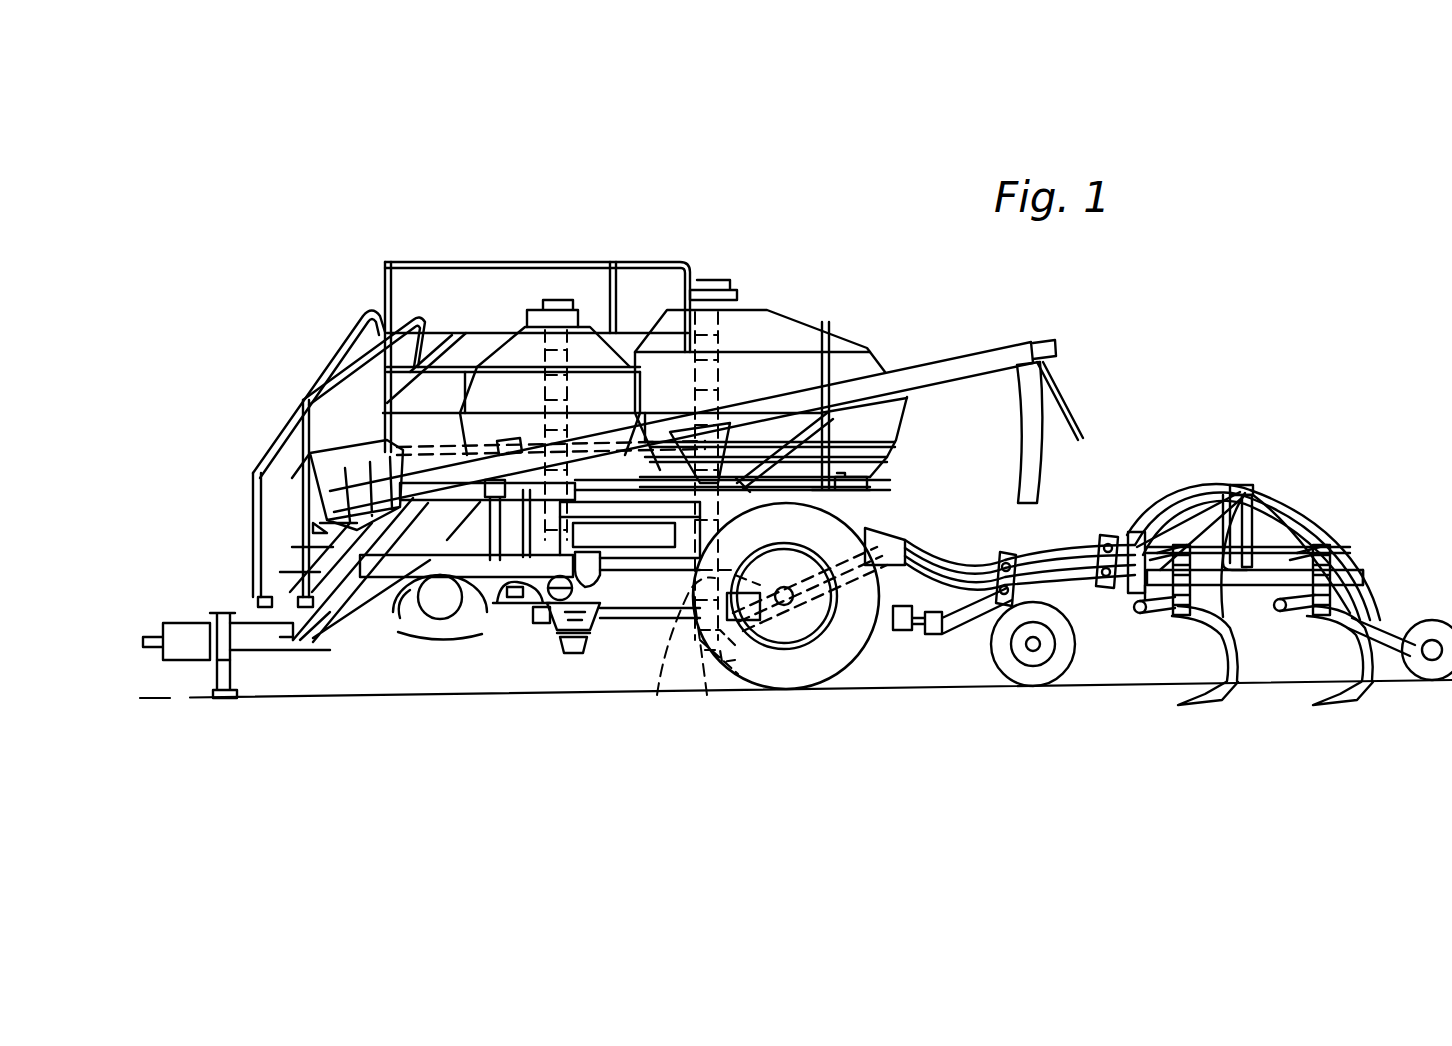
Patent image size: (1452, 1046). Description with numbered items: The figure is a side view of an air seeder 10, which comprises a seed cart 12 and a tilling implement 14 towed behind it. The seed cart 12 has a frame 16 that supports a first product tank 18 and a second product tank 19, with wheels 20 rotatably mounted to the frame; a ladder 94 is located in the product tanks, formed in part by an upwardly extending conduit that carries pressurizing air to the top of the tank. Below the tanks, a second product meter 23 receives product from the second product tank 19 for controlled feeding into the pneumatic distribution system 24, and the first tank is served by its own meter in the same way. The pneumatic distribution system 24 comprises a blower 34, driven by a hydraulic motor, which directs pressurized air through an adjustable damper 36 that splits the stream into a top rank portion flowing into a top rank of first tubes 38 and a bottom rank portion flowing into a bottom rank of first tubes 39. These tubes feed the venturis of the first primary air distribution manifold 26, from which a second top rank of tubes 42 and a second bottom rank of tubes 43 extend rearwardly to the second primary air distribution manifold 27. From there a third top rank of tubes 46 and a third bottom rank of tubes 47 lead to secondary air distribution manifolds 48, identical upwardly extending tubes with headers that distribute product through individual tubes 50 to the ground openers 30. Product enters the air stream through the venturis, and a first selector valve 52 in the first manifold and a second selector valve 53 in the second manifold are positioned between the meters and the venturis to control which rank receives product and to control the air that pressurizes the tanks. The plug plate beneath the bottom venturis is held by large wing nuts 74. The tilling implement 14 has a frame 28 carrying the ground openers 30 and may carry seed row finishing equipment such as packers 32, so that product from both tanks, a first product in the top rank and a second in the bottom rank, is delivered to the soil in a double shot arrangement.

The air seeder 10 is at (1146, 352).
The seed cart 12 is at (824, 301).
The tilling implement 14 is at (1272, 450).
The frame 16 is at (338, 627).
The first product tank 18 is at (512, 399).
The second product tank 19 is at (775, 384).
The wheels 20 is at (832, 672).
The second product meter 23 is at (676, 654).
The pneumatic distribution system 24 is at (400, 638).
The first primary air distribution manifold 26 is at (567, 648).
The second primary air distribution manifold 27 is at (726, 651).
The frame 28 is at (1250, 588).
The ground openers 30 is at (1200, 702).
The packers 32 is at (1444, 632).
The blower 34 is at (408, 603).
The adjustable damper 36 is at (470, 628).
The top rank of first tubes 38 is at (540, 630).
The bottom rank of first tubes 39 is at (540, 622).
The second top rank of tubes 42 is at (646, 600).
The second bottom rank of tubes 43 is at (656, 614).
The third top rank of tubes 46 is at (922, 530).
The third bottom rank of tubes 47 is at (948, 572).
The secondary air distribution manifolds 48 is at (1262, 522).
The individual tubes 50 is at (1370, 552).
The first selector valve 52 is at (592, 626).
The second selector valve 53 is at (738, 674).
The wing nuts 74 is at (570, 658).
The ladder 94 is at (576, 380).